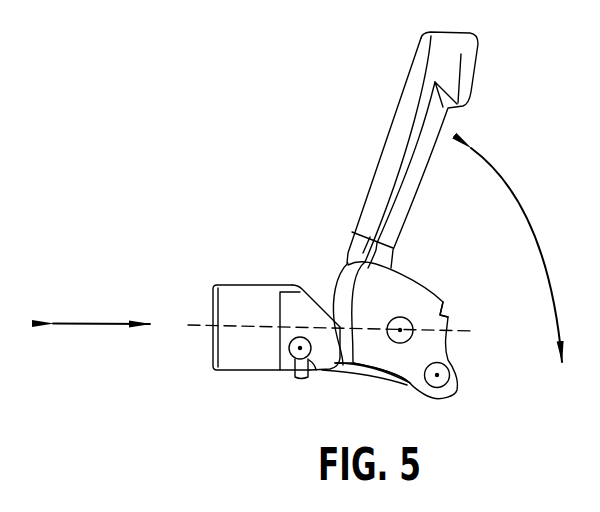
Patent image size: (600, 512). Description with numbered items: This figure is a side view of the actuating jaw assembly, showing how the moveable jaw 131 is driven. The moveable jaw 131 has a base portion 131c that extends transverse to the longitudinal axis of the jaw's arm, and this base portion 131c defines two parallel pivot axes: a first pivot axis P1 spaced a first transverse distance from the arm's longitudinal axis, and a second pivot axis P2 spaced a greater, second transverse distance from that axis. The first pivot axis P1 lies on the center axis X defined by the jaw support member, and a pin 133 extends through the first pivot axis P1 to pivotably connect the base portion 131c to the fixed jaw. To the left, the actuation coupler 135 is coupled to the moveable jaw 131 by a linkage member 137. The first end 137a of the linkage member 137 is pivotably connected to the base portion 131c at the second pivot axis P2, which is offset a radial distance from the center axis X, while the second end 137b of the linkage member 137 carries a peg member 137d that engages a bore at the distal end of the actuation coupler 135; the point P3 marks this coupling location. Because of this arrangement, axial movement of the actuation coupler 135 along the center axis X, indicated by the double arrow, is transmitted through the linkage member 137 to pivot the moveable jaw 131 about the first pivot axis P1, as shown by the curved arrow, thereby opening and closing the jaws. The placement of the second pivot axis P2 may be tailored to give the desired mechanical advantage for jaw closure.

The moveable jaw 131 is at (410, 102).
The base portion 131c is at (444, 318).
The pin 133 is at (403, 320).
The actuation coupler 135 is at (237, 304).
The linkage member 137 is at (348, 262).
The first end 137a is at (410, 384).
The second end 137b is at (297, 378).
The peg member 137d is at (309, 371).
The first pivot axis P1 is at (401, 329).
The second pivot axis P2 is at (438, 375).
The third pivot point P3 is at (300, 348).
The center axis X is at (332, 329).